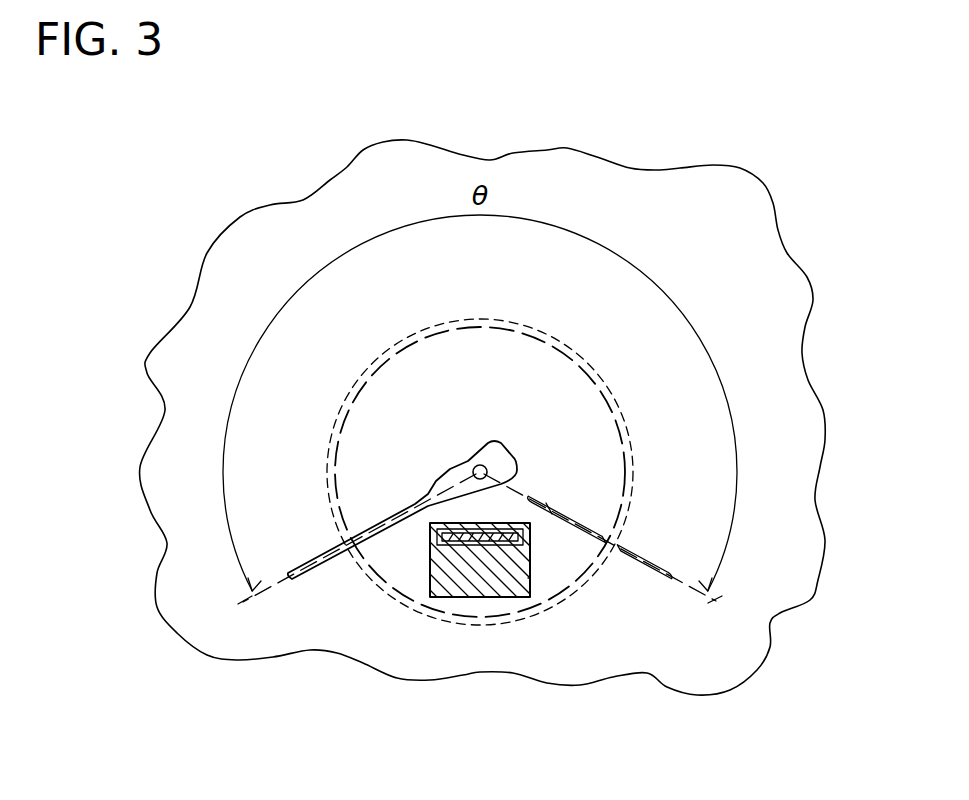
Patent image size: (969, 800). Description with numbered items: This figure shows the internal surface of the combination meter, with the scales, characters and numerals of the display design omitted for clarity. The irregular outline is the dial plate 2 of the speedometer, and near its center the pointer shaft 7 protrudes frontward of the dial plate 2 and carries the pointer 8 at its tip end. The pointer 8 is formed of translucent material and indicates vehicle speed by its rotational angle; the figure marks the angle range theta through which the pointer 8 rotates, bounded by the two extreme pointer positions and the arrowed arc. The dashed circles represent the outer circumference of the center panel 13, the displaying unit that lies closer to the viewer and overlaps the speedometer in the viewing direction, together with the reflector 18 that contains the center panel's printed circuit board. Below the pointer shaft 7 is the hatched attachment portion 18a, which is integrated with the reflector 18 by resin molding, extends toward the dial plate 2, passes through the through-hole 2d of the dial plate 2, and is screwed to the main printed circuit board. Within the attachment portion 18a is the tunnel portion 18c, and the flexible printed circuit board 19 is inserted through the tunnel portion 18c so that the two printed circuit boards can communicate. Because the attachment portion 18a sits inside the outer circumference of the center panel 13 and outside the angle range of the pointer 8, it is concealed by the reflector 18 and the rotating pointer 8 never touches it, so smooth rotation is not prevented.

The dial plate 2 is at (315, 230).
The through-hole 2d is at (528, 578).
The pointer shaft 7 is at (488, 478).
The pointer 8 is at (310, 574).
The center panel 13 is at (420, 322).
The reflector 18 is at (460, 322).
The attachment portion 18a is at (432, 562).
The tunnel portion 18c is at (470, 540).
The flexible printed circuit board 19 is at (432, 540).